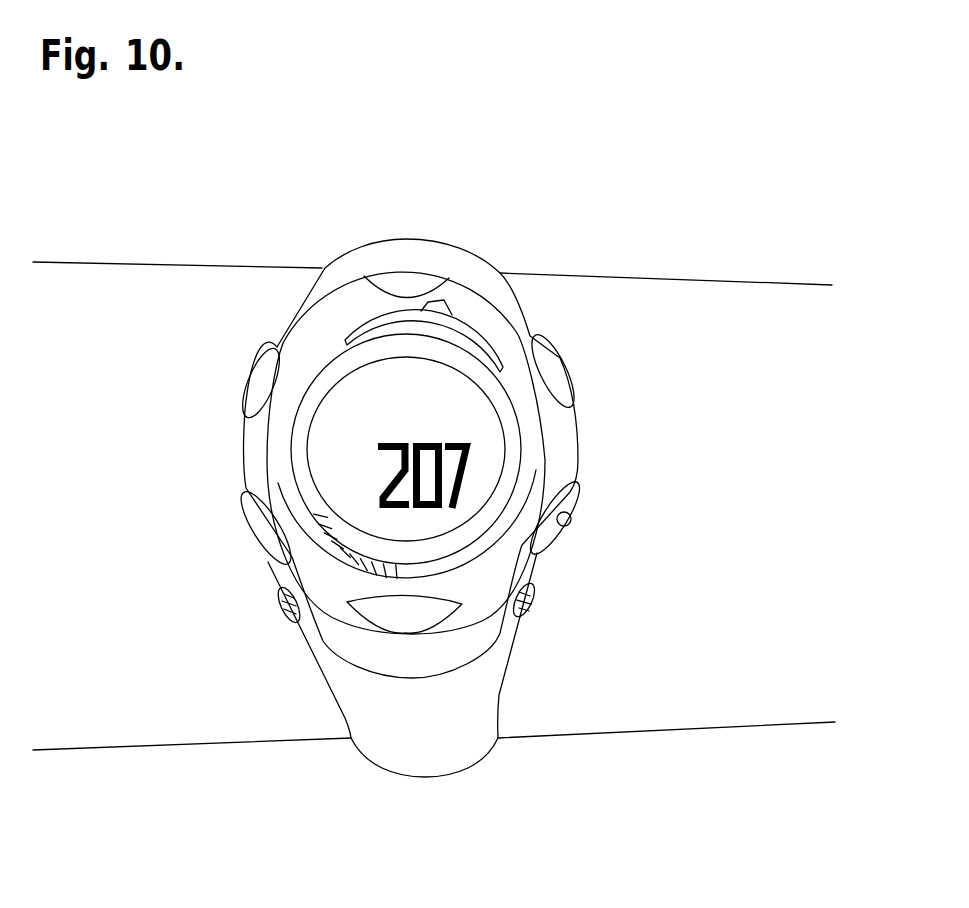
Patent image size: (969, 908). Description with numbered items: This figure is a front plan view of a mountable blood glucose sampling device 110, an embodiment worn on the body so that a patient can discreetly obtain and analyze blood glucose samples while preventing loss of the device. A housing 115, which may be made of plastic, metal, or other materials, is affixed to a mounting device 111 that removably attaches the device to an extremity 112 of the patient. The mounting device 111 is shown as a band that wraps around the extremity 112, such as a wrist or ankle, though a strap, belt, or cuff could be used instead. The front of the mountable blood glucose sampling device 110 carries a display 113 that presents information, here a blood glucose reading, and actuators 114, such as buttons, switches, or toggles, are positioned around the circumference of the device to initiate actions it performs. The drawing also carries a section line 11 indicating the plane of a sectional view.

The mountable blood glucose sampling device 110 is at (419, 188).
The mounting device 111 is at (426, 775).
The extremity 112 is at (257, 267).
The display 113 is at (505, 447).
The actuators 114 is at (571, 511).
The housing 115 is at (245, 452).
The section line 11- 11 is at (192, 578).